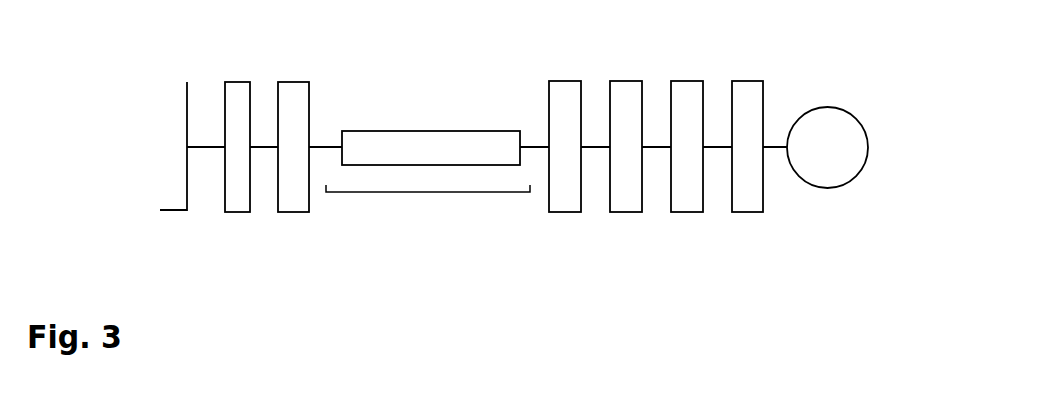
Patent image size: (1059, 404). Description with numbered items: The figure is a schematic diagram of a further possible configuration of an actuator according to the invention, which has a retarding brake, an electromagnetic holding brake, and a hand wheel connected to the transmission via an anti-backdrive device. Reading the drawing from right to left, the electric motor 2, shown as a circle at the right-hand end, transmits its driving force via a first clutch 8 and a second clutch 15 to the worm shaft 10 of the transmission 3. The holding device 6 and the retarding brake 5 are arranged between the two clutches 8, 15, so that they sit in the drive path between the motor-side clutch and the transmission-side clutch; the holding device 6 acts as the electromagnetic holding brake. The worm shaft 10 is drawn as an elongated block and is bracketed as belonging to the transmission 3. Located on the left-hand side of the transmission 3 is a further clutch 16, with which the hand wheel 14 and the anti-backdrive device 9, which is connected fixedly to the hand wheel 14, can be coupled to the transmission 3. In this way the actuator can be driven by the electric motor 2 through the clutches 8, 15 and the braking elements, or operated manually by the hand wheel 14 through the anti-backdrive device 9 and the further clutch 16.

The electric motor 2 is at (825, 137).
The transmission 3 is at (422, 192).
The retarding brake 5 is at (689, 177).
The holding device 6 is at (628, 193).
The clutch of the electric motor 8 is at (748, 93).
The anti-backdrive device 9 is at (240, 195).
The worm shaft 10 is at (394, 152).
The hand wheel 14 is at (172, 212).
The clutch of the braking module 15 is at (565, 92).
The clutch for engaging a hand wheel 16 is at (296, 95).